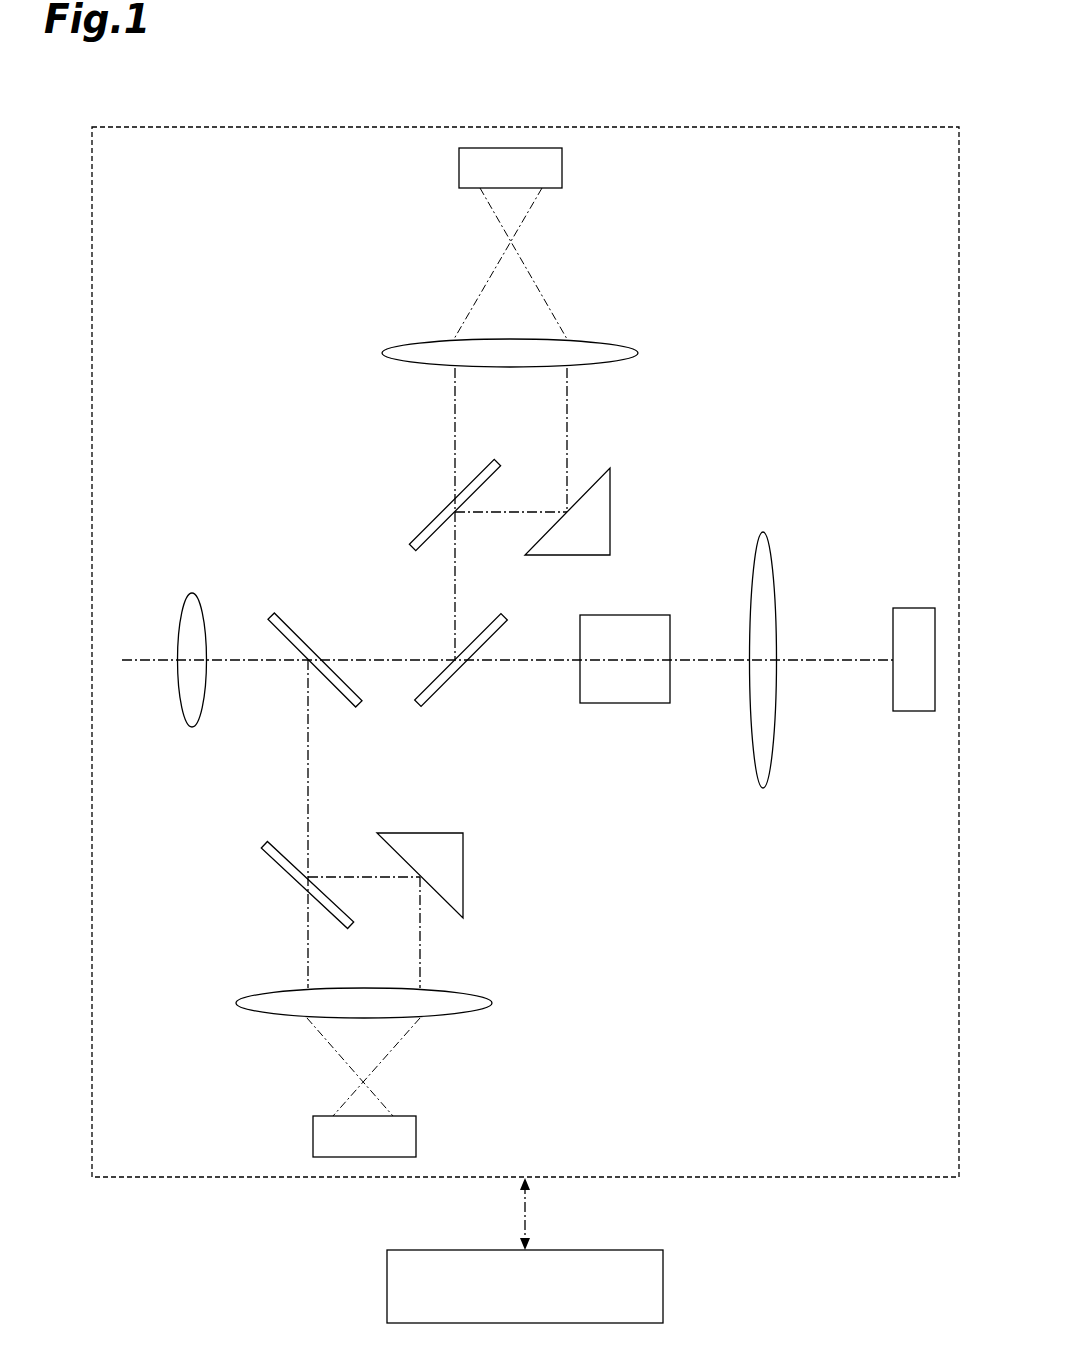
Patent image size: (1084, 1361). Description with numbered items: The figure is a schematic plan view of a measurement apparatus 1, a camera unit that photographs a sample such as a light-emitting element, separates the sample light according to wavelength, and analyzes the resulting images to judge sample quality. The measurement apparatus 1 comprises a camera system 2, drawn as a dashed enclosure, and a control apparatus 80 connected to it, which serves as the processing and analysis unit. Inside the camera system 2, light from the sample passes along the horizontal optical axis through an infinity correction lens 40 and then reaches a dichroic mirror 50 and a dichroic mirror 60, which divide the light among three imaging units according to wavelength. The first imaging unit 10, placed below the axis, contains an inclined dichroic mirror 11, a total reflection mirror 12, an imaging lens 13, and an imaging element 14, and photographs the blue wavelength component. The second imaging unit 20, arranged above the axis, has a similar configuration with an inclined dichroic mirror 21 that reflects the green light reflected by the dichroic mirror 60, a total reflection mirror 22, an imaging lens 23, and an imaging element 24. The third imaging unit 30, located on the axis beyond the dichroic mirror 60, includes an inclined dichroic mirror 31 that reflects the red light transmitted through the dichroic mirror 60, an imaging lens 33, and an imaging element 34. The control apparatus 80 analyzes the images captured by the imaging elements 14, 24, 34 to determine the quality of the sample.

The measurement apparatus 1 is at (246, 88).
The camera system 2 is at (800, 126).
The first imaging unit 10 is at (212, 1084).
The inclined dichroic mirror 11 is at (275, 862).
The total reflection mirror 12 is at (438, 832).
The imaging lens 13 is at (492, 1000).
The imaging element 14 is at (416, 1132).
The second imaging unit 20 is at (626, 286).
The inclined dichroic mirror 21 is at (420, 526).
The total reflection mirror 22 is at (610, 495).
The imaging lens 23 is at (638, 350).
The imaging element 24 is at (562, 162).
The third imaging unit 30 is at (787, 502).
The inclined dichroic mirror 31 is at (646, 614).
The imaging lens 33 is at (777, 580).
The imaging element 34 is at (920, 607).
The infinity correction lens 40 is at (192, 592).
The dichroic mirror 50 is at (291, 617).
The dichroic mirror 60 is at (489, 621).
The control apparatus 80 is at (663, 1273).